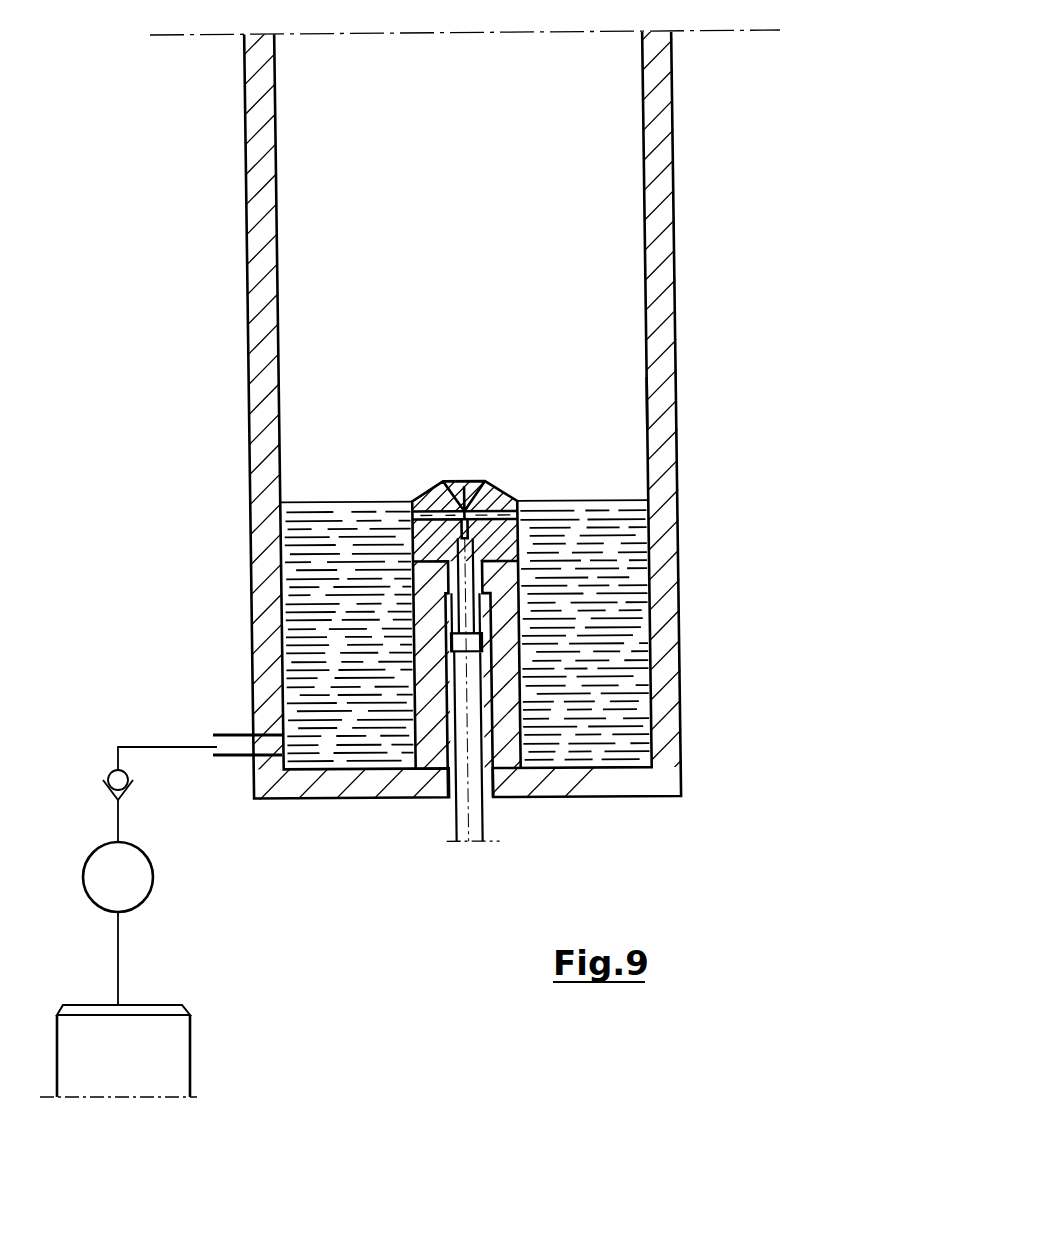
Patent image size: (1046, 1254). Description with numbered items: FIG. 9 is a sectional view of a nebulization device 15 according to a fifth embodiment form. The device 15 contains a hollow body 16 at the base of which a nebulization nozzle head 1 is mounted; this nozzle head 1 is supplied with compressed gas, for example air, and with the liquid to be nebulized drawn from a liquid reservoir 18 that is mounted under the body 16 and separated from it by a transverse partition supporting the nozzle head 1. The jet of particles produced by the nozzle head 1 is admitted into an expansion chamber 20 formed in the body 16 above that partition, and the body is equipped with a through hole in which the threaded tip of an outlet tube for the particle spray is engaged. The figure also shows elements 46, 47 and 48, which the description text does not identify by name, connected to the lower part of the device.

The nebulization device 15 is at (680, 240).
The hollow body 16 is at (662, 403).
The expansion chamber 20 is at (512, 393).
The nebulization nozzle head 1 is at (517, 525).
The liquid reservoir 18 is at (662, 722).
The supply tube 48 is at (470, 818).
The pump 47 is at (125, 873).
The tank 46 is at (163, 1045).